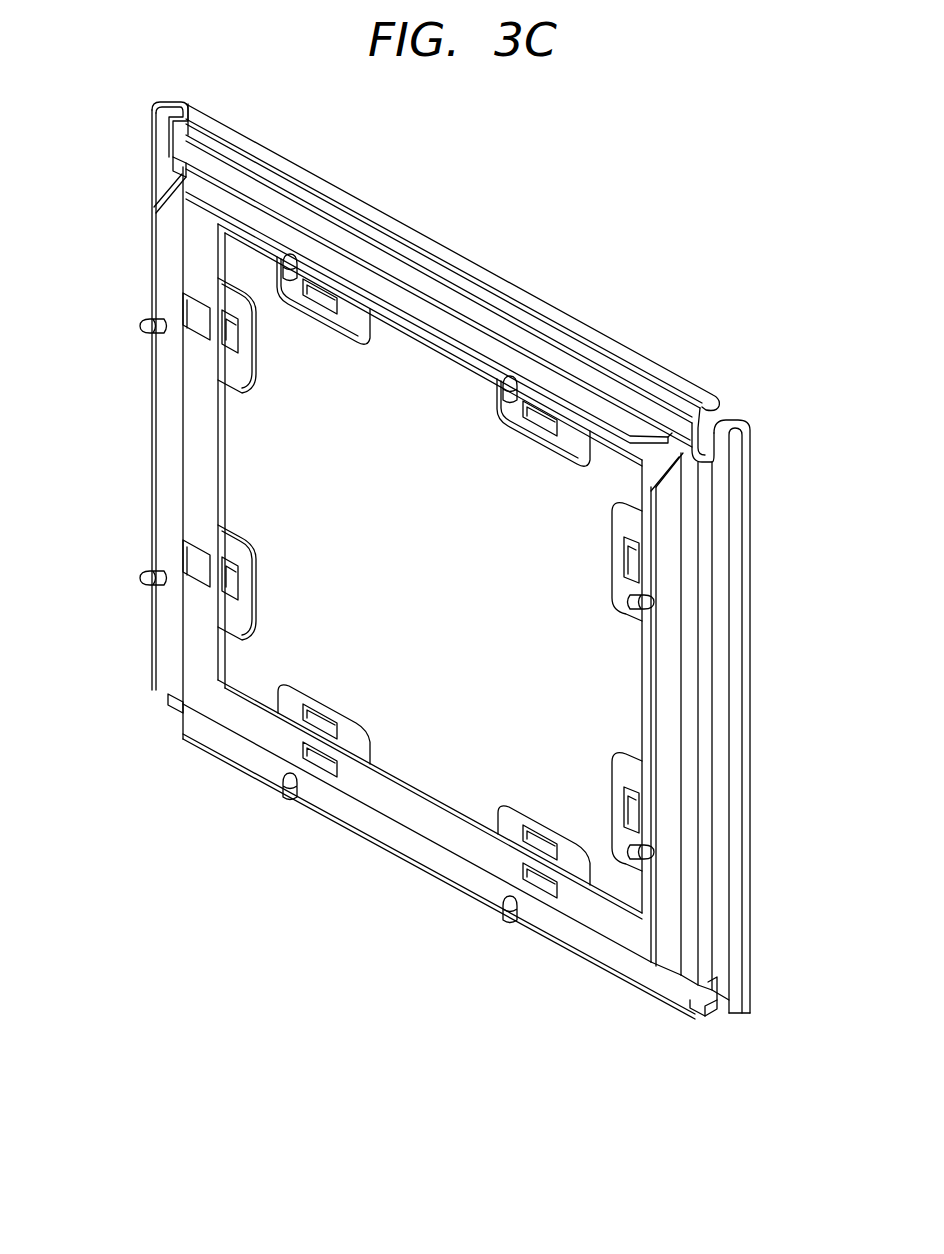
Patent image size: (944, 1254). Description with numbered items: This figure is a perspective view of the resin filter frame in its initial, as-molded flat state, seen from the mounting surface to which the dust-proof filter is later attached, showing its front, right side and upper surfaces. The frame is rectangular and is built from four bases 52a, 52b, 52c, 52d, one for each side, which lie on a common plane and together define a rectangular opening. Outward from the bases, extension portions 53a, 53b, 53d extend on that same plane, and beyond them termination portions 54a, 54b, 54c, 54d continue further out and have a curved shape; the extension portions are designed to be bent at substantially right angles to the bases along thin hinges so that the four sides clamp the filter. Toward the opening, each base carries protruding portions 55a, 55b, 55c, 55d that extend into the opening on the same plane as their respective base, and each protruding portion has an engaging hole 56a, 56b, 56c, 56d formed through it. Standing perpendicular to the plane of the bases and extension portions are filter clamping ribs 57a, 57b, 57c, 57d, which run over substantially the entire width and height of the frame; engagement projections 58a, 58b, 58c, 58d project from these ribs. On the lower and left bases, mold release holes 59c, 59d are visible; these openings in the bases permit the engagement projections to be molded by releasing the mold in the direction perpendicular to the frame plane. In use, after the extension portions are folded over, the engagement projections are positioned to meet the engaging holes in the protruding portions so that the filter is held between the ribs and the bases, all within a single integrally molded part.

The base 52a is at (445, 360).
The base 52b is at (650, 665).
The base 52c is at (438, 805).
The base 52d is at (210, 475).
The extension portion 53a is at (445, 302).
The extension portion 53b is at (692, 748).
The extension portion 53d is at (172, 175).
The termination portion 54a is at (373, 208).
The termination portion 54b is at (740, 647).
The termination portion 54c is at (710, 1012).
The termination portion 54d is at (162, 137).
The protruding portion 55a is at (330, 322).
The protruding portion 55b is at (617, 558).
The protruding portion 55c is at (297, 703).
The protruding portion 55d is at (248, 383).
The engaging hole 56a is at (322, 296).
The engaging hole 56b is at (634, 557).
The engaging hole 56c is at (320, 718).
The engaging hole 56d is at (232, 340).
The filter clamping rib 57a is at (266, 222).
The filter clamping rib 57b is at (680, 700).
The filter clamping rib 57c is at (378, 832).
The filter clamping rib 57d is at (170, 460).
The engagement projection 58a is at (292, 258).
The engagement projection 58b is at (652, 604).
The engagement projection 58c is at (284, 800).
The engagement projection 58d is at (150, 325).
The mold release hole 59c is at (327, 762).
The mold release hole 59d is at (196, 310).